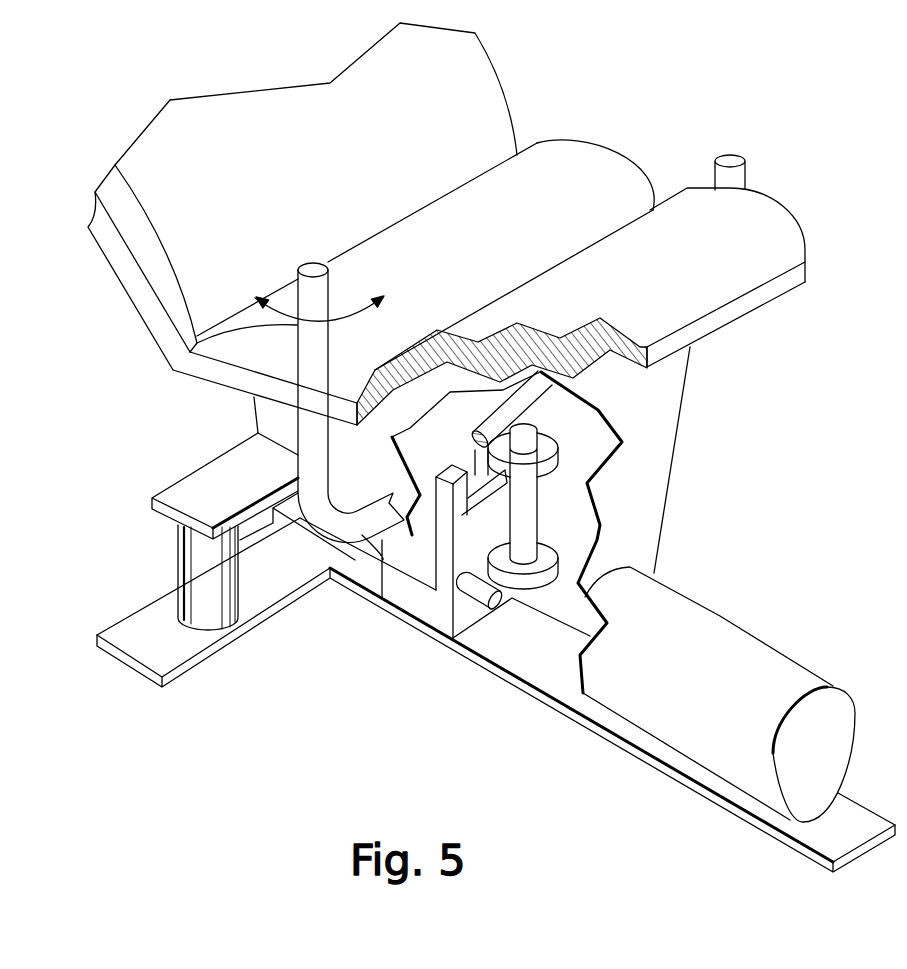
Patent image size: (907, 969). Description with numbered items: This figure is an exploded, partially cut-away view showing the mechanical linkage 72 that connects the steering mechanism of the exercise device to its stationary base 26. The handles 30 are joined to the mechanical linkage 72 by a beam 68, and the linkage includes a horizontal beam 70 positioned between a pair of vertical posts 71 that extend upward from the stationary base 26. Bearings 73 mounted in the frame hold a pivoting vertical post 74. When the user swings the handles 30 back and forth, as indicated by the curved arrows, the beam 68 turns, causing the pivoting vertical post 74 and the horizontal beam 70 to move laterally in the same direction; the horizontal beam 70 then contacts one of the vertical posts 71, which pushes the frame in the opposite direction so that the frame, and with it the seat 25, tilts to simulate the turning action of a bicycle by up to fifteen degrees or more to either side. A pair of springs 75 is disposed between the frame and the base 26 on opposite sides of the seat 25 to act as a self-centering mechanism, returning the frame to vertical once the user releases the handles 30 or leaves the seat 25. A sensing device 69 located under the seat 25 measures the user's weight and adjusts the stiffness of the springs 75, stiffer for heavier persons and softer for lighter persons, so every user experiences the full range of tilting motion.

The seat 25 is at (135, 313).
The stationary base 26 is at (142, 642).
The handles 30 is at (297, 340).
The beam 68 is at (548, 415).
The sensing device 69 is at (345, 425).
The horizontal beam 70 is at (493, 507).
The vertical posts 71 is at (475, 458).
The mechanical linkage 72 is at (592, 458).
The bearings 73 is at (563, 577).
The pivoting vertical post 74 is at (533, 537).
The springs 75 is at (178, 545).